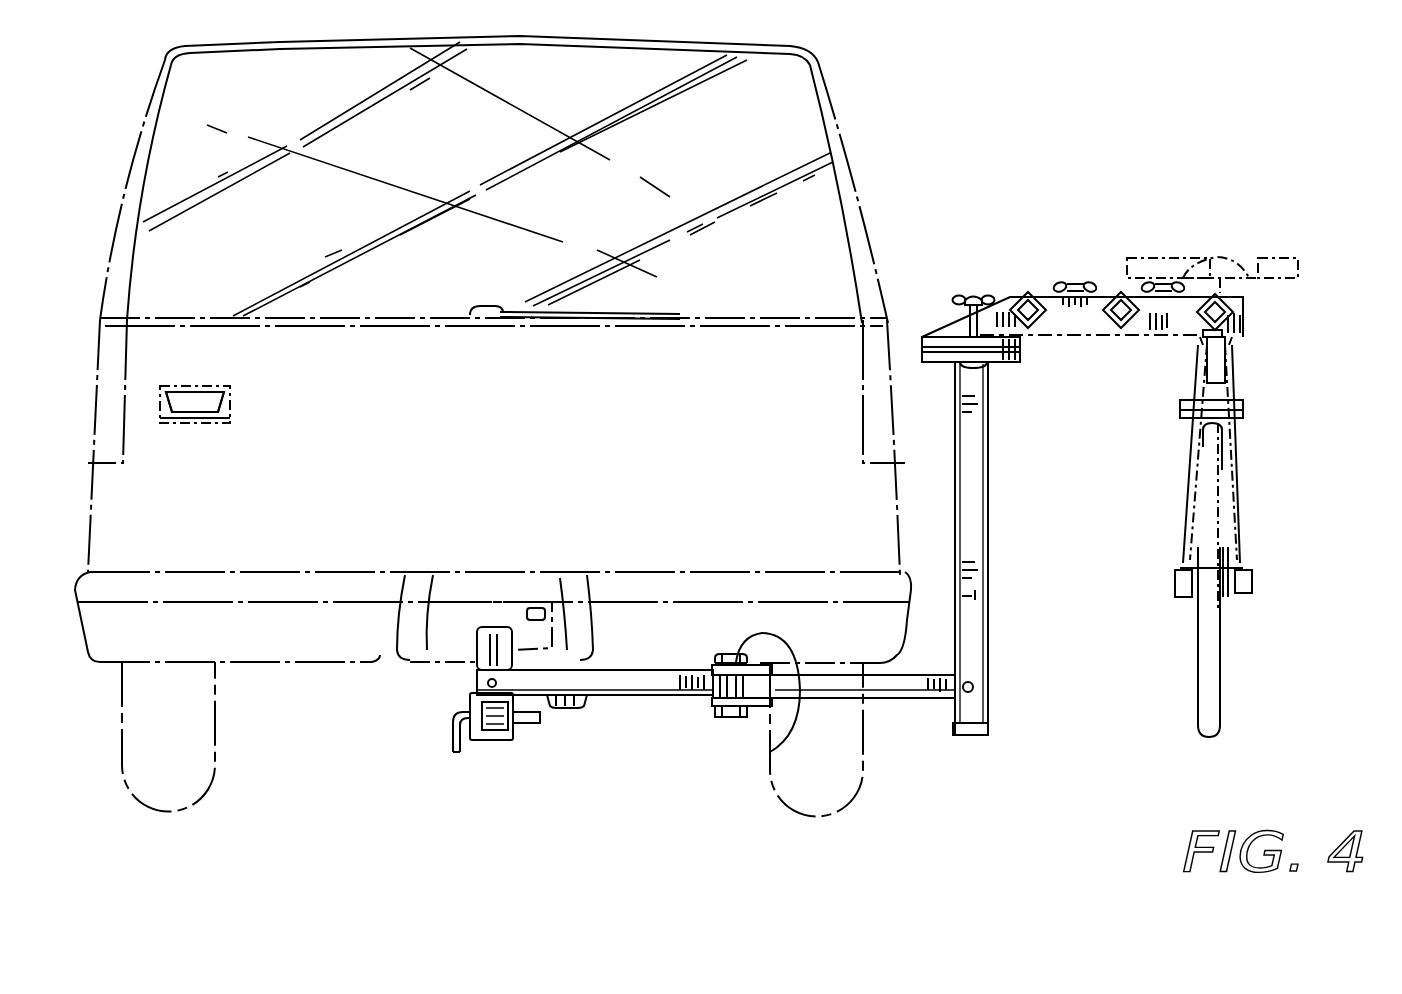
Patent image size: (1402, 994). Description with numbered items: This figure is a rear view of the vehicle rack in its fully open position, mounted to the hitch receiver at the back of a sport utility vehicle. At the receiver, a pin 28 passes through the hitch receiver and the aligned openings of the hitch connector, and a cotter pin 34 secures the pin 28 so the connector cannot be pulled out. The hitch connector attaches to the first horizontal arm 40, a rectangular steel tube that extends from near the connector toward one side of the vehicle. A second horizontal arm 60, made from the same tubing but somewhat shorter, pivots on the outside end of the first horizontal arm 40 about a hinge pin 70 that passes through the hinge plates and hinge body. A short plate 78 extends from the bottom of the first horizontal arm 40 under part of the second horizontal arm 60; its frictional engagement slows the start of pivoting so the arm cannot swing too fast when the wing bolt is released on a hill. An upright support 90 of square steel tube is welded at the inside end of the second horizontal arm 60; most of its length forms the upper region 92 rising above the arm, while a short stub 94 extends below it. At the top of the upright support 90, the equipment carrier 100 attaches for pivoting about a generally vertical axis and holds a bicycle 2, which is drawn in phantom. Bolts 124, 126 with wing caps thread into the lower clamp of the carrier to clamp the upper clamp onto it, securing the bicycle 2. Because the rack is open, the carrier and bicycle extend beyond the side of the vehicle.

The bicycle 2 is at (1240, 438).
The pin 28 is at (458, 717).
The cotter pin 34 is at (525, 735).
The first horizontal arm 40 is at (660, 683).
The second horizontal arm 60 is at (913, 687).
The hinge pin 70 is at (770, 752).
The short plate 78 is at (587, 710).
The upright support 90 is at (1021, 548).
The upper region 92 is at (988, 428).
The short stub 94 is at (987, 722).
The equipment carrier 100 is at (995, 318).
The bolt with wing cap 124 is at (1053, 282).
The bolt with wing cap 126 is at (1153, 287).